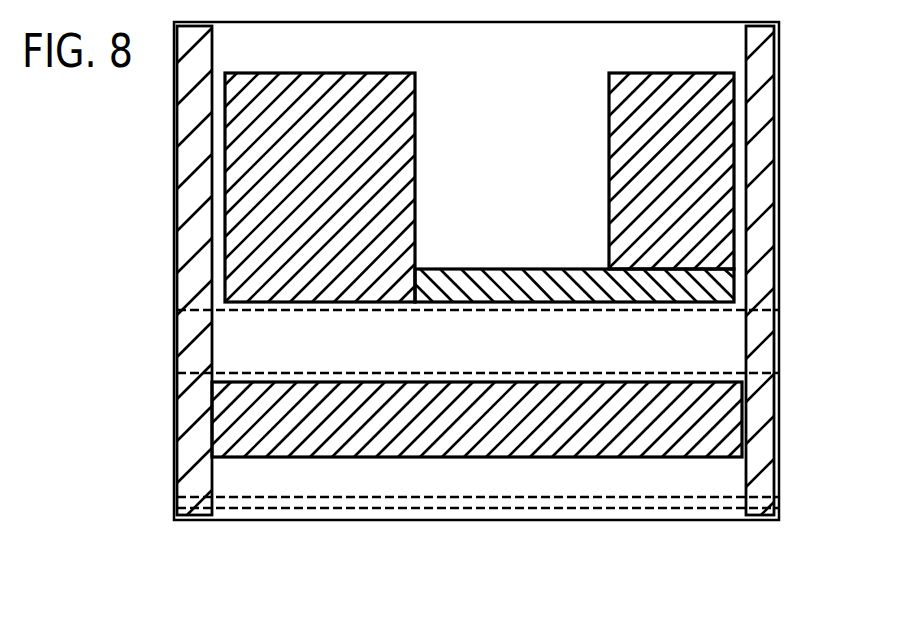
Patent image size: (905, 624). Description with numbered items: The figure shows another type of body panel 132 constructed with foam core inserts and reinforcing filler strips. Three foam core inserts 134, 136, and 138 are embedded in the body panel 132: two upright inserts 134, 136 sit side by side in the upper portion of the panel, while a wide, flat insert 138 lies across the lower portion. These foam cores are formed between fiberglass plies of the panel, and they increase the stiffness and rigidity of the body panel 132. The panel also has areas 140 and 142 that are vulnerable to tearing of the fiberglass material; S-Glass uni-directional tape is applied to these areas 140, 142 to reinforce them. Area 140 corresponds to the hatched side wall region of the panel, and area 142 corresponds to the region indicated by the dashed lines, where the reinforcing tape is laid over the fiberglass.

The body panel 132 is at (186, 534).
The foam core insert 134 is at (231, 199).
The foam core insert 136 is at (726, 200).
The foam core insert 138 is at (735, 417).
The area 140 is at (186, 253).
The area 142 is at (765, 325).